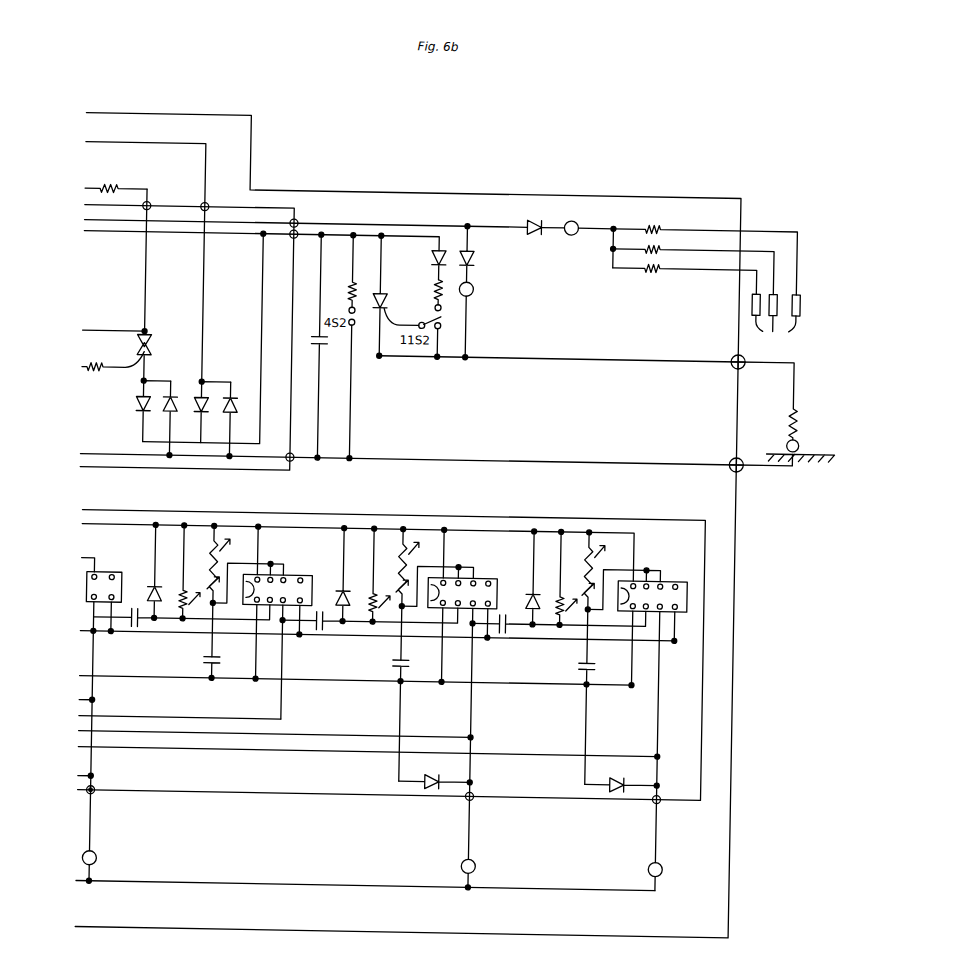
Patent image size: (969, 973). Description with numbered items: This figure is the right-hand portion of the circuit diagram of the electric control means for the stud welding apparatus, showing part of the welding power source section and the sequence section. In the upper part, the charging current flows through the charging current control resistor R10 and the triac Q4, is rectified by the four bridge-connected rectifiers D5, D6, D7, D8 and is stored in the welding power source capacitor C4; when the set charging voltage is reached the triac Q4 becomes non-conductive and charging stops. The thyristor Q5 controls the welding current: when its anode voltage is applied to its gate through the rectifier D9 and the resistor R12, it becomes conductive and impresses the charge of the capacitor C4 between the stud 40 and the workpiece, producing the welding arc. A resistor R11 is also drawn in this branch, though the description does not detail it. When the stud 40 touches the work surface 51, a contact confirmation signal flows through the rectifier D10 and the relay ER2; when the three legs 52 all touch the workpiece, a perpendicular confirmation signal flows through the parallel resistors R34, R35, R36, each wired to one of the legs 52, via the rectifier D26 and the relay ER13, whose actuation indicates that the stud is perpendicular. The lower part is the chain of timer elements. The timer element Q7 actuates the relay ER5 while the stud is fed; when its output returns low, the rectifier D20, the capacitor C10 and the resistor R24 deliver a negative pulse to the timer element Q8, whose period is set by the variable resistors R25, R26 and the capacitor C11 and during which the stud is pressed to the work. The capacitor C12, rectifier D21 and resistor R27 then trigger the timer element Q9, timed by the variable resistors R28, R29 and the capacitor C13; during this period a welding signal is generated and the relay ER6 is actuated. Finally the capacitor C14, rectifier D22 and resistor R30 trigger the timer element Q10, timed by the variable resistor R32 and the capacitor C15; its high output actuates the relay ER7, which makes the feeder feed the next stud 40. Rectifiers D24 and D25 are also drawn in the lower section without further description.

The stud 40 is at (791, 443).
The work surface 51 is at (822, 453).
The legs 52 is at (775, 323).
The charging current control resistor R10 is at (116, 181).
The triac Q4 is at (124, 354).
The rectifier D5 is at (153, 410).
The rectifier D6 is at (175, 419).
The rectifier D7 is at (212, 411).
The rectifier D8 is at (235, 420).
The welding power source capacitor C4 is at (325, 346).
The resistor R11 is at (363, 347).
The thyristor Q5 is at (407, 296).
The rectifier D9 is at (447, 266).
The resistor R12 is at (426, 295).
The rectifier D10 is at (478, 253).
The relay ER2 is at (478, 321).
The rectifier D26 is at (530, 239).
The relay ER13 is at (571, 240).
The resistor R34 is at (704, 254).
The resistor R35 is at (692, 264).
The resistor R36 is at (684, 273).
The timer element Q7 is at (111, 580).
The relay ER5 is at (102, 866).
The capacitor C10 is at (181, 618).
The rectifier D20 is at (165, 571).
The resistor R24 is at (195, 572).
The variable resistor R26 is at (196, 586).
The variable resistor R25 is at (228, 590).
The capacitor C11 is at (222, 669).
The timer element Q8 is at (288, 590).
The capacitor C12 is at (369, 621).
The rectifier D21 is at (354, 575).
The resistor R27 is at (385, 575).
The variable resistor R29 is at (387, 590).
The variable resistor R28 is at (417, 594).
The capacitor C13 is at (410, 721).
The timer element Q9 is at (473, 594).
The capacitor C14 is at (558, 624).
The rectifier D22 is at (543, 578).
The resistor R30 is at (571, 578).
The variable resistor R32 is at (575, 593).
The capacitor C15 is at (596, 724).
The timer element Q10 is at (663, 602).
The diode D24 is at (436, 785).
The diode D25 is at (621, 788).
The relay ER6 is at (481, 873).
The relay ER7 is at (668, 877).